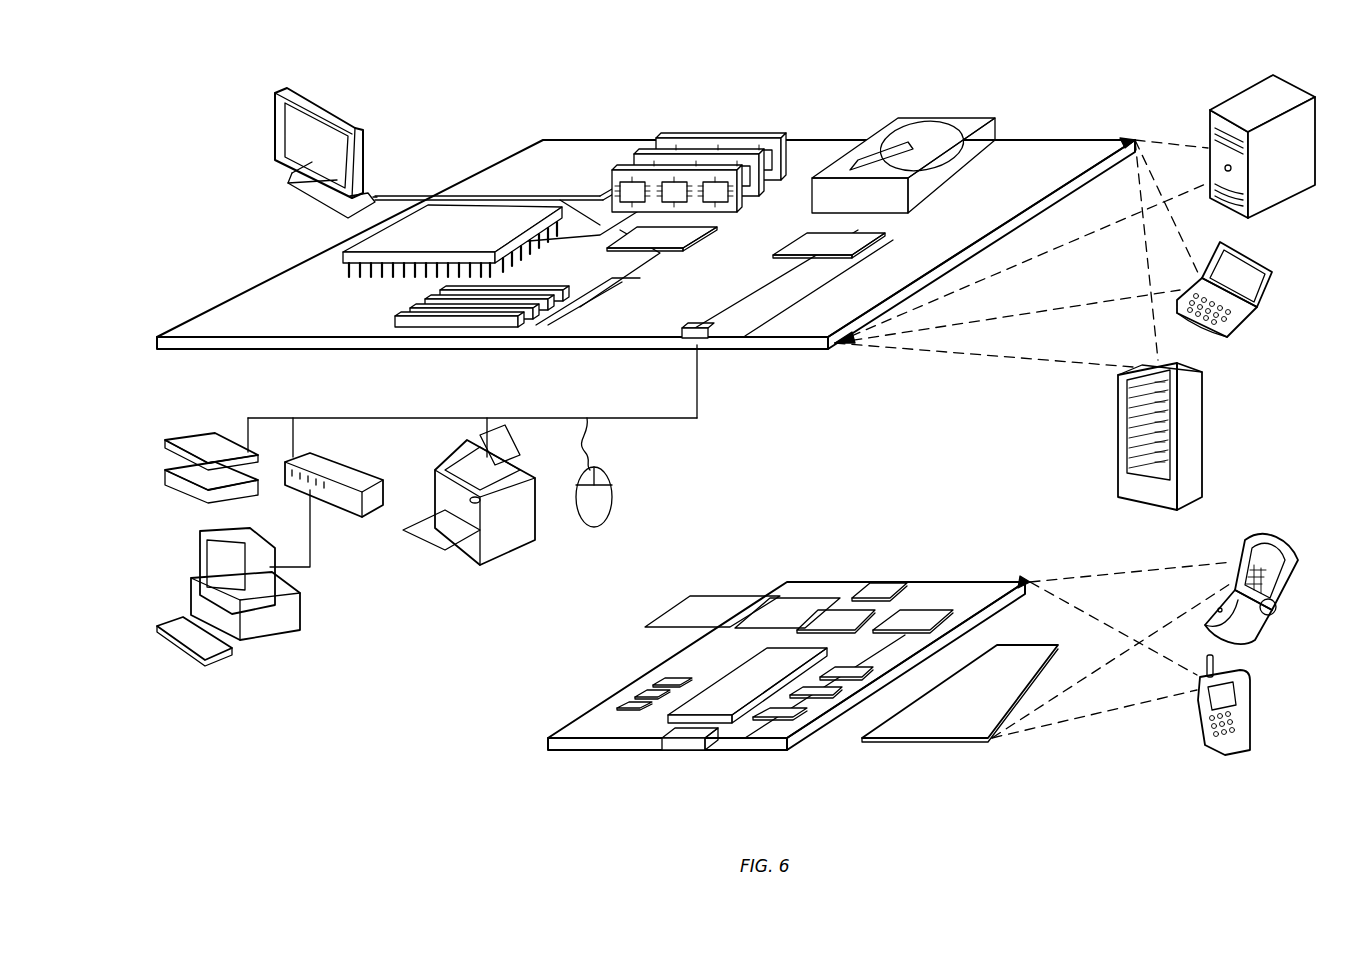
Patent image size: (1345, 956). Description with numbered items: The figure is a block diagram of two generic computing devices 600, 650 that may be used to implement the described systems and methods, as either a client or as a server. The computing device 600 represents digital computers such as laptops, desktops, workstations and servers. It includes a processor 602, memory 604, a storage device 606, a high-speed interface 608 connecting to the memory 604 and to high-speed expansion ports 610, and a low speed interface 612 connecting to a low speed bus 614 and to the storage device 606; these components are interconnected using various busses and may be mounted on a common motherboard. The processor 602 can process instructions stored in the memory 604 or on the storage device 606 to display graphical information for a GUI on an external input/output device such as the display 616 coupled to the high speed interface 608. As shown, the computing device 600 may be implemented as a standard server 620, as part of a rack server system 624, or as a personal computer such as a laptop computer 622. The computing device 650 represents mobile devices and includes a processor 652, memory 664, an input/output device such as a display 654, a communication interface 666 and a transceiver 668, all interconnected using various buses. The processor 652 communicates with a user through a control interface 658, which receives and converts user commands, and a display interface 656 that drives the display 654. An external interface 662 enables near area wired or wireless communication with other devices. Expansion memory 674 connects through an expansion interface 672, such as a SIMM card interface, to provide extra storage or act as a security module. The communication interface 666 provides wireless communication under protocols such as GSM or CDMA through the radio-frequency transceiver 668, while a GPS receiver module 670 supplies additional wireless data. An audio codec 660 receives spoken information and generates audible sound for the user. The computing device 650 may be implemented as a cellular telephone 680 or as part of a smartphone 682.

The computing device 600 is at (471, 115).
The processor 602 is at (352, 252).
The memory 604 is at (668, 150).
The storage device 606 is at (905, 126).
The high-speed interface 608 is at (640, 240).
The high-speed expansion ports 610 is at (420, 310).
The low speed interface 612 is at (808, 240).
The low speed bus 614 is at (708, 338).
The display 616 is at (280, 94).
The standard server 620 is at (1212, 124).
The laptop computer 622 is at (1273, 268).
The rack server system 624 is at (1117, 458).
The computing device 650 is at (524, 748).
The processor 652 is at (720, 702).
The display 654 is at (958, 725).
The display interface 656 is at (785, 712).
The control interface 658 is at (818, 692).
The audio codec 660 is at (845, 674).
The external interface 662 is at (685, 735).
The memory 664 is at (644, 697).
The communication interface 666 is at (840, 620).
The transceiver 668 is at (912, 620).
The GPS receiver module 670 is at (890, 584).
The expansion interface 672 is at (772, 598).
The expansion memory 674 is at (700, 596).
The cellular telephone 680 is at (1252, 540).
The smartphone 682 is at (1205, 708).